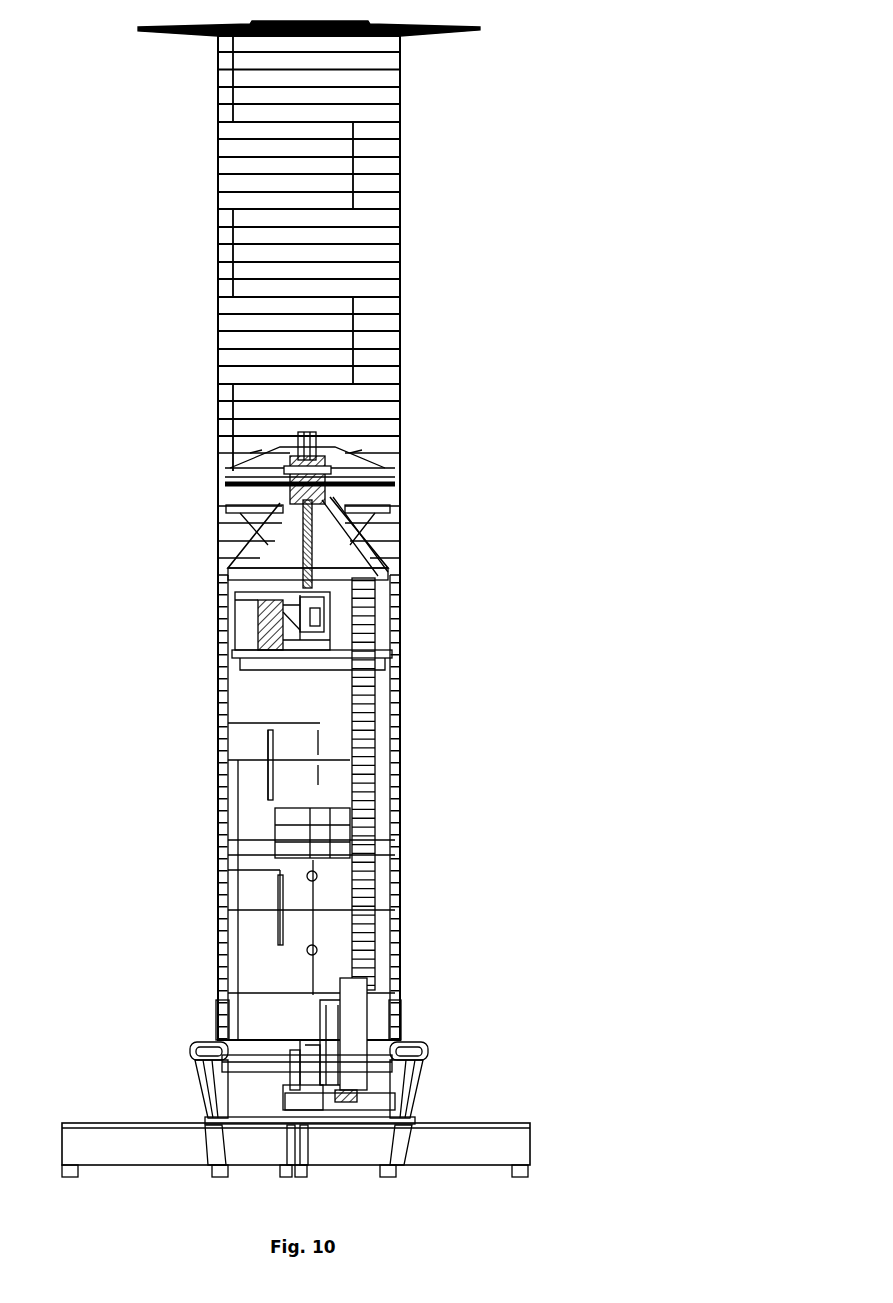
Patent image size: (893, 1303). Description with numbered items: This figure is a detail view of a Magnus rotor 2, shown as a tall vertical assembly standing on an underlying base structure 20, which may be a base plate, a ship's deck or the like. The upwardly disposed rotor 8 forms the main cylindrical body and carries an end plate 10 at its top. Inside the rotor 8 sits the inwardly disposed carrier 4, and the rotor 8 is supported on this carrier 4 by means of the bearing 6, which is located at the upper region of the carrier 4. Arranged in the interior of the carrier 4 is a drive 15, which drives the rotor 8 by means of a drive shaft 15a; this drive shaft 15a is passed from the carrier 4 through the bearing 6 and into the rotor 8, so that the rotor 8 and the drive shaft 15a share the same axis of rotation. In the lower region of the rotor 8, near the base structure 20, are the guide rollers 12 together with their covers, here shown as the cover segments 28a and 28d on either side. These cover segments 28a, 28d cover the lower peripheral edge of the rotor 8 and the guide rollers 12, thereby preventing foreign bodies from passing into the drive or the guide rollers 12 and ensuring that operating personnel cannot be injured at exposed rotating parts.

The Magnus rotor 2 is at (160, 322).
The carrier 4 is at (277, 548).
The bearing 6 is at (353, 466).
The rotor 8 is at (382, 241).
The end plate 10 is at (425, 35).
The guide rollers 12 is at (208, 1040).
The drive 15 is at (256, 640).
The drive shaft 15a is at (310, 543).
The base structure 20 is at (455, 1148).
The cover segment 28a is at (427, 1046).
The cover segment 28d is at (193, 1046).